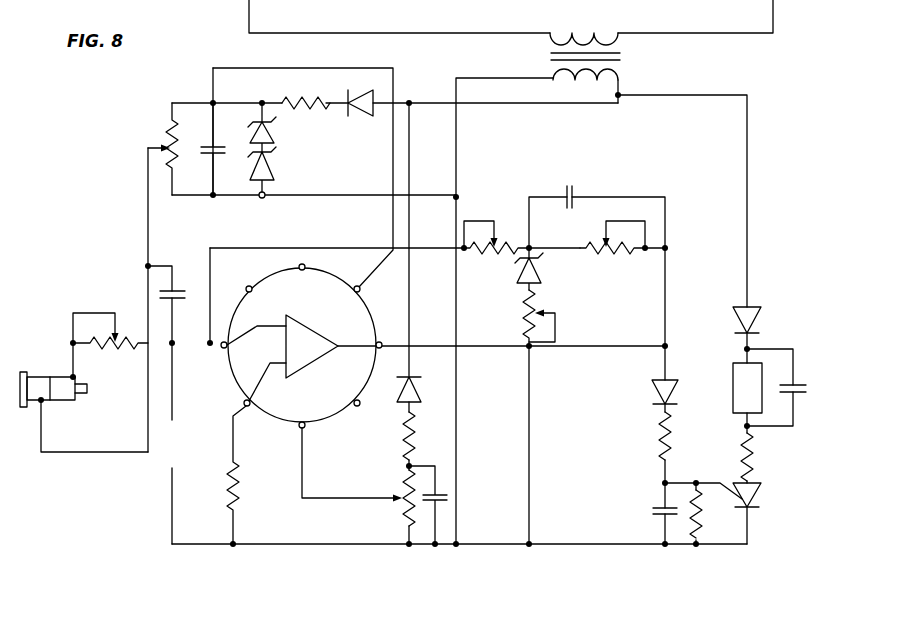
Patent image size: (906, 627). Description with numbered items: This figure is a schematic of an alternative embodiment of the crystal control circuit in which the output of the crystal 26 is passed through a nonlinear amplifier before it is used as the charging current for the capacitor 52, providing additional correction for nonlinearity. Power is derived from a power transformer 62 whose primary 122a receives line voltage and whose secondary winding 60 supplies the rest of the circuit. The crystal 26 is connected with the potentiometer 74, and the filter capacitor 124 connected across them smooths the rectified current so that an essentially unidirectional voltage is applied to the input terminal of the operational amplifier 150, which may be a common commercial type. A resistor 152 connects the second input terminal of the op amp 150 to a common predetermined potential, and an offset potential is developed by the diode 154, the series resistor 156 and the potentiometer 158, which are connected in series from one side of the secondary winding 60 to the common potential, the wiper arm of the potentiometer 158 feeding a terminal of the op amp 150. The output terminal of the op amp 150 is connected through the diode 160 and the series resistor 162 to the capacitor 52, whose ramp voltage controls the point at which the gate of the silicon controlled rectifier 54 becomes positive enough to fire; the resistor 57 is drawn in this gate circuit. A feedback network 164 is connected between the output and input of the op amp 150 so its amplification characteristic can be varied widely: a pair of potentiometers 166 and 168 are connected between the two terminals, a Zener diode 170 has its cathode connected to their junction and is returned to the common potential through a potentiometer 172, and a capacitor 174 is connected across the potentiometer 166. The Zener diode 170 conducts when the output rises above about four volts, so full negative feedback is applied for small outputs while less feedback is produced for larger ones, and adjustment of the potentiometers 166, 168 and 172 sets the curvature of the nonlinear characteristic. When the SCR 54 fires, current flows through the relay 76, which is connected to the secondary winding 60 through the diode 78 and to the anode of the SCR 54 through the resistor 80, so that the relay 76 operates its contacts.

The primary 122a is at (592, 30).
The power transformer 62 is at (652, 70).
The transformer secondary winding 60 is at (553, 87).
The capacitor 174 is at (574, 195).
The feedback network 164 is at (573, 242).
The potentiometer 168 is at (488, 254).
The Zener diode 170 is at (540, 276).
The potentiometer 166 is at (615, 255).
The potentiometer 172 is at (522, 323).
The diode 78 is at (766, 318).
The relay 76 is at (733, 374).
The resistor 80 is at (751, 457).
The silicon controlled rectifier 54 is at (760, 495).
The diode 160 is at (652, 392).
The series resistor 162 is at (658, 437).
The capacitor 52 is at (657, 511).
The resistor 57 is at (702, 514).
The filter capacitor 124 is at (180, 289).
The crystal 26 is at (50, 347).
The potentiometer 74 is at (111, 353).
The operational amplifier 150 is at (313, 335).
The resistor 152 is at (237, 482).
The diode 154 is at (396, 394).
The series resistor 156 is at (400, 440).
The potentiometer 158 is at (400, 510).